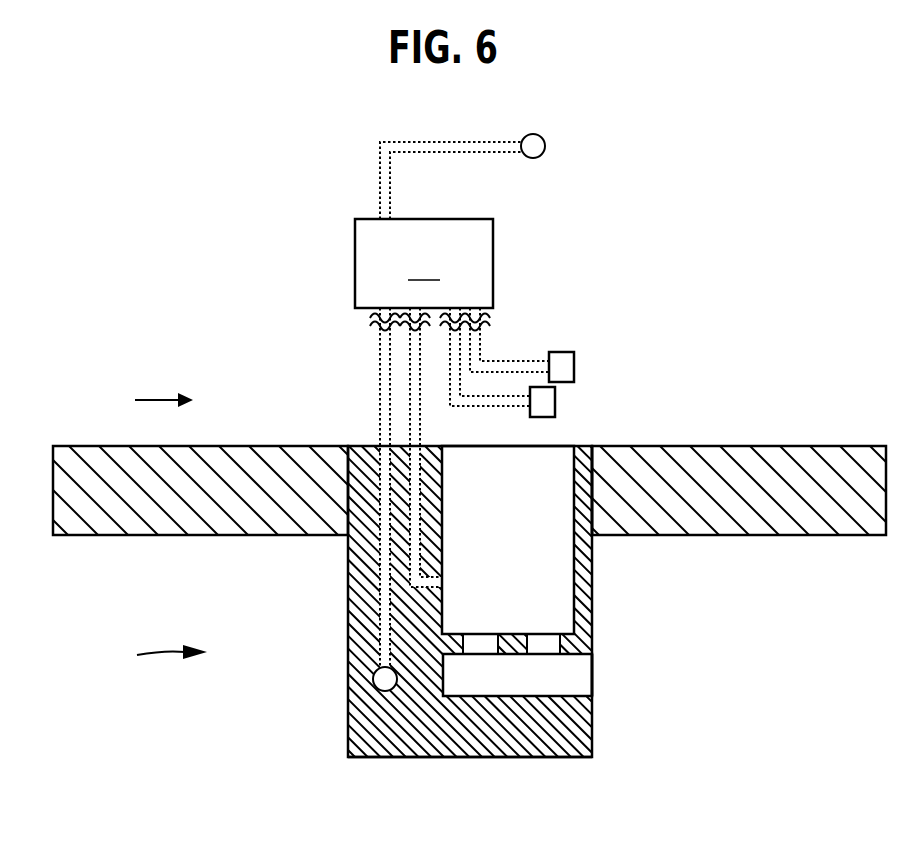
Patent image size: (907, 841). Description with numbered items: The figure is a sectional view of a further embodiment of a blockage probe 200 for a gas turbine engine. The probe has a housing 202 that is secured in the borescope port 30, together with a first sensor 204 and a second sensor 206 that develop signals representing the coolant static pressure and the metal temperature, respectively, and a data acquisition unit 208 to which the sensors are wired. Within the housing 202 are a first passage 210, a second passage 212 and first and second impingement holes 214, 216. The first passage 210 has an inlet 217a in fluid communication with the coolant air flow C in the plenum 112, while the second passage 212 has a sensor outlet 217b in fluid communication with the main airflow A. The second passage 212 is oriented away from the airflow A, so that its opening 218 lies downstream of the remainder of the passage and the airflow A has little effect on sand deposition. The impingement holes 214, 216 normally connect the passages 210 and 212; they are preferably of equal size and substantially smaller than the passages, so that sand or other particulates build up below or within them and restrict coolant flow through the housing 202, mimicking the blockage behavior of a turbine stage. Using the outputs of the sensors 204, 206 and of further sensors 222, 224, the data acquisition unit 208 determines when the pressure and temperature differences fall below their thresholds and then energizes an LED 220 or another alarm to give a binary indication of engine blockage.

The borescope port 30 is at (593, 518).
The plenum 112 is at (216, 364).
The blockage probe 200 is at (362, 611).
The housing 202 is at (348, 672).
The first sensor 204 is at (437, 588).
The second sensor 206 is at (385, 691).
The data acquisition unit 208 is at (424, 275).
The first passage 210 is at (537, 588).
The second passage 212 is at (485, 677).
The first impingement hole 214 is at (485, 658).
The second impingement hole 216 is at (555, 640).
The inlet 217a is at (545, 446).
The sensor outlet 217b is at (594, 684).
The opening 218 is at (502, 678).
The LED 220 is at (538, 136).
The sensor 222 is at (574, 367).
The sensor 224 is at (555, 405).
The main airflow A is at (158, 658).
The coolant air flow C is at (152, 402).